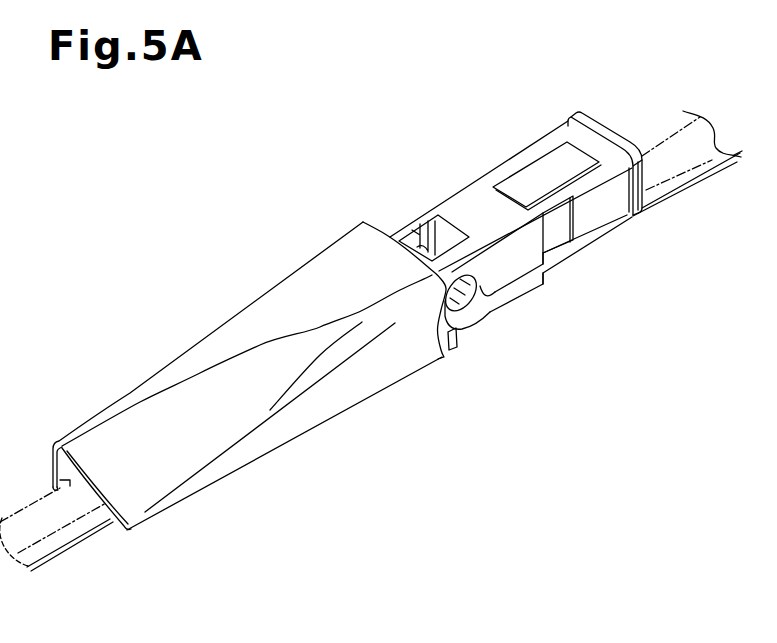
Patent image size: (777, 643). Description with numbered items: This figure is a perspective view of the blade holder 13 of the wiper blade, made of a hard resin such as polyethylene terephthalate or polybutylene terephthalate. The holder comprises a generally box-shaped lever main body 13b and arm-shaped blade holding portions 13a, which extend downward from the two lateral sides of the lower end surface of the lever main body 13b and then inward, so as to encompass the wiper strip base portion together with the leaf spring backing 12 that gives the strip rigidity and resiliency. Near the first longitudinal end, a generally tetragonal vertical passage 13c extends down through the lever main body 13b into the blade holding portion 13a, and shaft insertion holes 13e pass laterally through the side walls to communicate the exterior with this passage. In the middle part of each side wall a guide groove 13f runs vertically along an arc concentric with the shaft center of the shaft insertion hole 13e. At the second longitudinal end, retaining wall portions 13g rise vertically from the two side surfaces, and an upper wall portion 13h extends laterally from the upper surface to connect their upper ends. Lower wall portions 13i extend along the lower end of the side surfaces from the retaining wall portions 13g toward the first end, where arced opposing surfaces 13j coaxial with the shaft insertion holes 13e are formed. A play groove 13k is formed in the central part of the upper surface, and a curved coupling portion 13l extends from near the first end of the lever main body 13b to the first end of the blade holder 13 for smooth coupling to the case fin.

The backing 12 is at (73, 548).
The blade holder 13 is at (368, 308).
The blade holding portions 13a is at (538, 299).
The lever main body 13b is at (480, 198).
The vertical passage 13c is at (445, 237).
The shaft insertion holes 13e is at (474, 300).
The guide grooves 13f is at (578, 219).
The retaining wall portions 13g is at (644, 182).
The upper wall portion 13h is at (597, 126).
The lower wall portions 13i is at (564, 266).
The opposing surfaces 13j is at (465, 340).
The play groove 13k is at (542, 177).
The curved coupling portion 13l is at (200, 388).